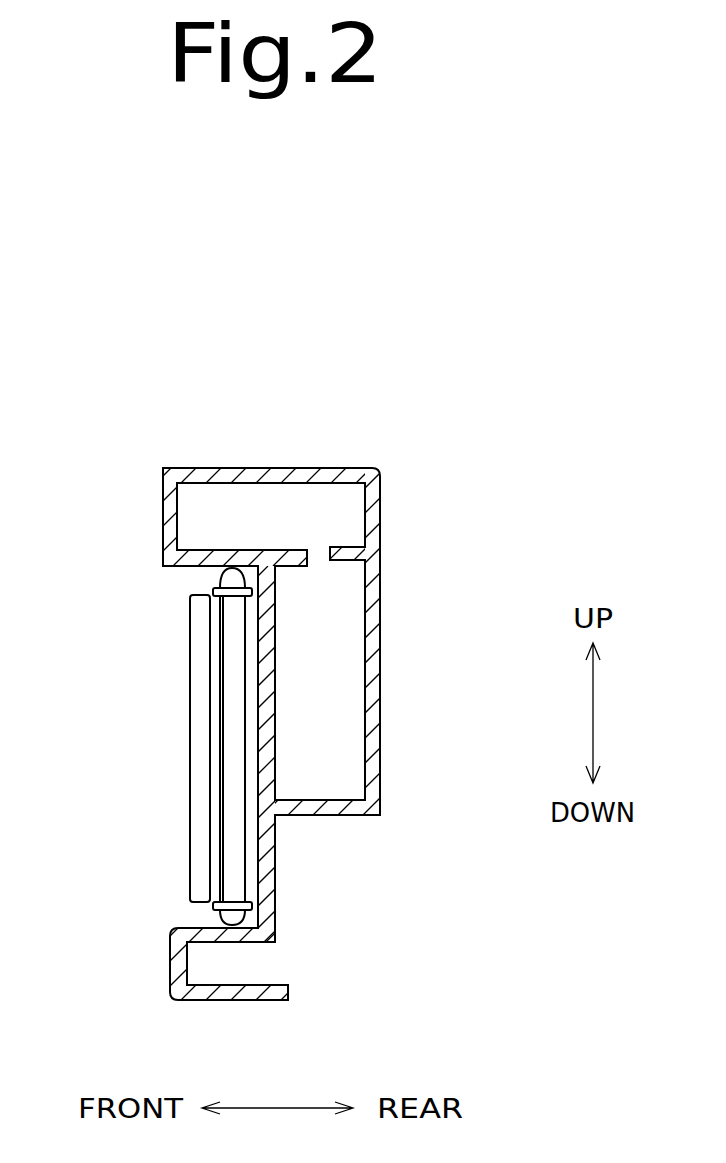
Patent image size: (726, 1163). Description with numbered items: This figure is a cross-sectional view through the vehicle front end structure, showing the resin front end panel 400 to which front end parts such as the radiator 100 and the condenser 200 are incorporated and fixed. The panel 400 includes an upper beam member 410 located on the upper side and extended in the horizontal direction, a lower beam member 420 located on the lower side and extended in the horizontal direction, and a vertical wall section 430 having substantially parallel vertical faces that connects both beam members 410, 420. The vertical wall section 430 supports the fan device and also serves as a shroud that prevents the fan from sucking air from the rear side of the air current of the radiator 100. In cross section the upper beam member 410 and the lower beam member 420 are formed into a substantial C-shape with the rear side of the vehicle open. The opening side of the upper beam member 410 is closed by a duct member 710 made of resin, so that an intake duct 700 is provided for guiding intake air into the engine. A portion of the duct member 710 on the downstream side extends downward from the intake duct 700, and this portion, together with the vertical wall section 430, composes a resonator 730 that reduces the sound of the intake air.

The radiator 100 is at (235, 835).
The condenser 200 is at (197, 742).
The front end panel 400 is at (161, 522).
The upper beam member 410 is at (192, 467).
The lower beam member 420 is at (177, 968).
The vertical wall section 430 is at (277, 880).
The intake duct 700 is at (312, 503).
The duct member 710 is at (384, 517).
The resonator 730 is at (335, 687).